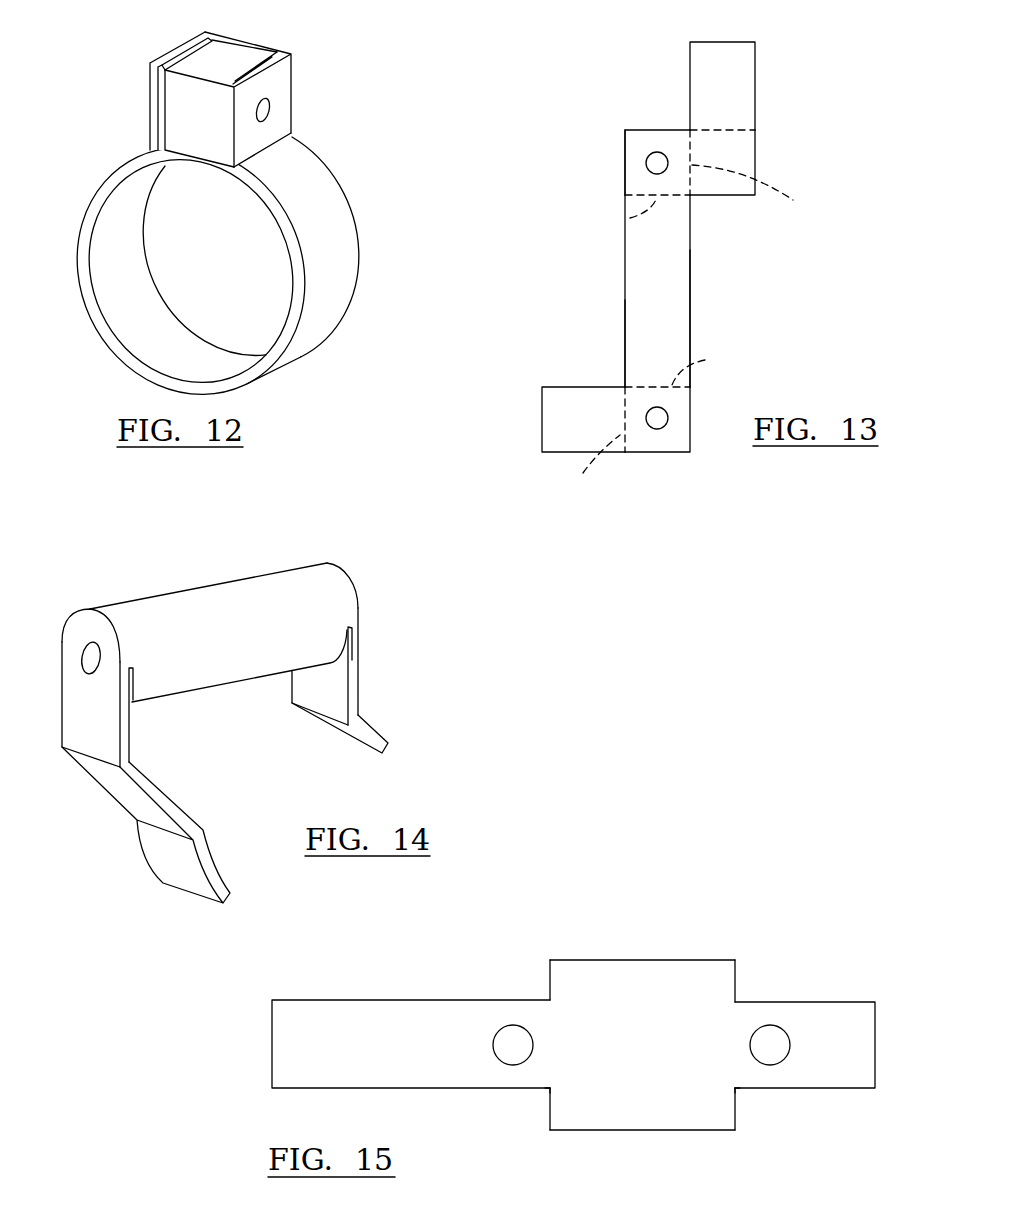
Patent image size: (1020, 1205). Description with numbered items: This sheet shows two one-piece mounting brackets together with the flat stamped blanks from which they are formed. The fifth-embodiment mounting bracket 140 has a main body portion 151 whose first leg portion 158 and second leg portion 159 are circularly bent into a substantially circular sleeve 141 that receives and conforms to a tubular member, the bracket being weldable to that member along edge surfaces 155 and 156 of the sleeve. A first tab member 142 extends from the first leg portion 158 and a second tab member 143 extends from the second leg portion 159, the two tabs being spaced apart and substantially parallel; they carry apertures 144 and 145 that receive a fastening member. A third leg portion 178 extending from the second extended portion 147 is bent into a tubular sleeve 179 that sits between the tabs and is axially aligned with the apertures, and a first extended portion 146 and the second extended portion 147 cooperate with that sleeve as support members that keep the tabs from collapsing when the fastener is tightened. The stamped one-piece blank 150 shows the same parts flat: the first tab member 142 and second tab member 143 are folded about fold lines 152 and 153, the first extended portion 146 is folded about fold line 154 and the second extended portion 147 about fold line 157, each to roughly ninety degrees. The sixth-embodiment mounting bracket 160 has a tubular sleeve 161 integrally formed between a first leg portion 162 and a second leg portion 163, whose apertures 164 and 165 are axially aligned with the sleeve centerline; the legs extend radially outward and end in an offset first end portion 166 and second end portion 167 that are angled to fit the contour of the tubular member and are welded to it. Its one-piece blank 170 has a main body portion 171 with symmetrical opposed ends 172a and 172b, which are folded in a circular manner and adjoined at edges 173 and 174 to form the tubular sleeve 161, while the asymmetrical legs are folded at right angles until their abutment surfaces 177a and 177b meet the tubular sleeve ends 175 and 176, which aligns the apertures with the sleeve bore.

In FIG. 12, the mounting bracket 140 is at (402, 115).
In FIG. 12, the substantially circular sleeve 141 is at (327, 293).
In FIG. 12, the first tab member 142 is at (277, 125).
In FIG. 13, the first tab member 142 is at (678, 437).
In FIG. 12, the second tab member 143 is at (157, 57).
In FIG. 13, the second tab member 143 is at (637, 187).
In FIG. 12, the aperture 144 is at (270, 107).
In FIG. 13, the aperture 144 is at (658, 425).
In FIG. 13, the aperture 145 is at (658, 162).
In FIG. 12, the first extended portion 146 is at (192, 135).
In FIG. 13, the first extended portion 146 is at (572, 428).
In FIG. 12, the second extended portion 147 is at (266, 40).
In FIG. 13, the second extended portion 147 is at (743, 163).
In FIG. 13, the one-piece blank 150 is at (803, 308).
In FIG. 12, the main body portion 151 is at (300, 347).
In FIG. 13, the main body portion 151 is at (677, 318).
In FIG. 13, the fold line 152 is at (705, 360).
In FIG. 13, the fold line 153 is at (630, 218).
In FIG. 13, the fold line 154 is at (590, 468).
In FIG. 12, the edge surface 155 is at (137, 343).
In FIG. 12, the edge surface 156 is at (188, 303).
In FIG. 13, the fold line 157 is at (751, 196).
In FIG. 12, the first leg portion 158 is at (340, 243).
In FIG. 13, the first leg portion 158 is at (640, 357).
In FIG. 12, the second leg portion 159 is at (112, 200).
In FIG. 13, the second leg portion 159 is at (677, 233).
In FIG. 14, the mounting bracket 160 is at (440, 635).
In FIG. 14, the tubular sleeve 161 is at (230, 612).
In FIG. 14, the first leg portion 162 is at (110, 742).
In FIG. 15, the first leg portion 162 is at (377, 1015).
In FIG. 14, the second leg portion 163 is at (325, 688).
In FIG. 15, the second leg portion 163 is at (832, 1027).
In FIG. 14, the aperture 164 is at (93, 662).
In FIG. 15, the aperture 164 is at (508, 1040).
In FIG. 15, the aperture 165 is at (770, 1040).
In FIG. 14, the first end portion 166 is at (172, 868).
In FIG. 14, the second end portion 167 is at (342, 732).
In FIG. 15, the one-piece blank 170 is at (780, 892).
In FIG. 15, the main body portion 171 is at (687, 1037).
In FIG. 15, the opposed end 172a is at (655, 1120).
In FIG. 15, the opposed end 172b is at (608, 970).
In FIG. 15, the edge 173 is at (572, 955).
In FIG. 15, the edge 174 is at (612, 1133).
In FIG. 14, the tubular sleeve end 175 is at (120, 635).
In FIG. 14, the tubular sleeve end 176 is at (345, 595).
In FIG. 14, the abutment surface 177a is at (133, 672).
In FIG. 15, the abutment surface 177a is at (535, 1072).
In FIG. 14, the abutment surface 177b is at (342, 655).
In FIG. 15, the abutment surface 177b is at (743, 1077).
In FIG. 12, the third leg portion 178 is at (238, 50).
In FIG. 13, the third leg portion 178 is at (732, 88).
In FIG. 12, the tubular sleeve 179 is at (208, 67).